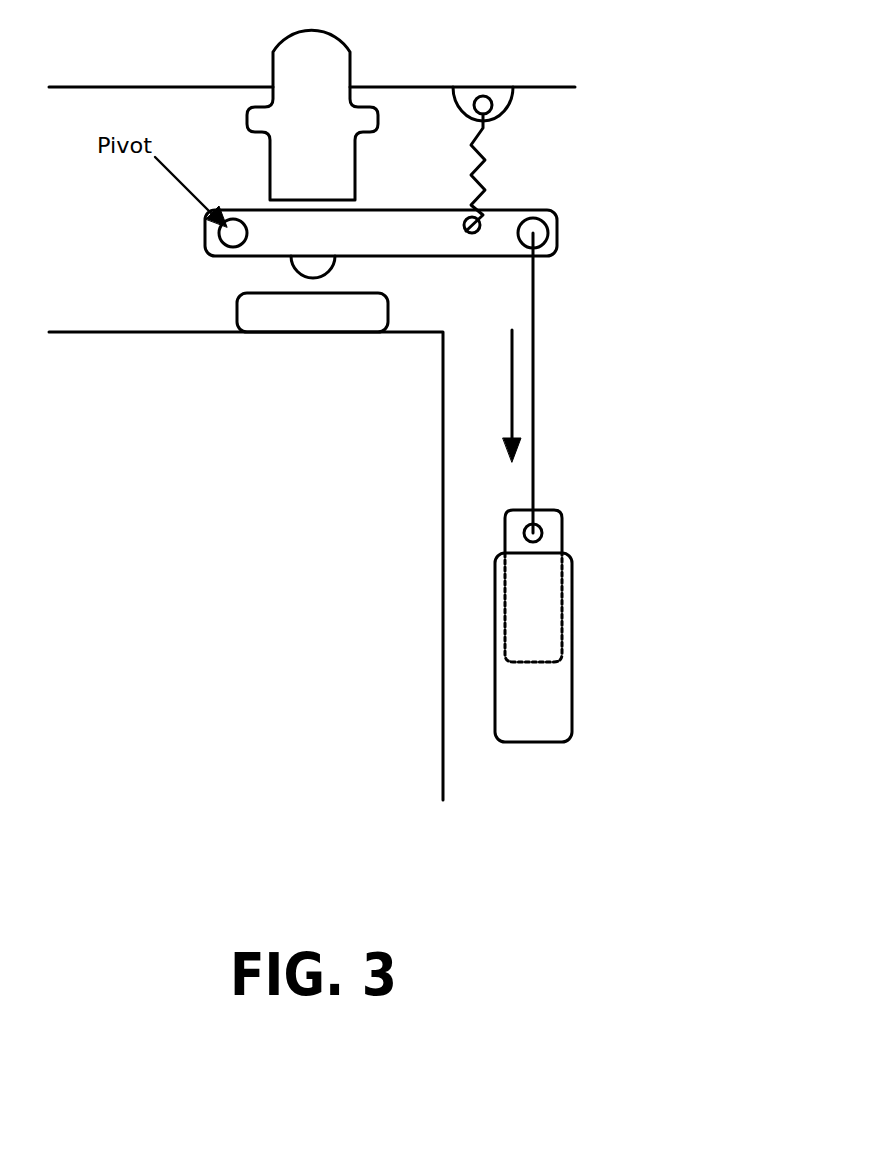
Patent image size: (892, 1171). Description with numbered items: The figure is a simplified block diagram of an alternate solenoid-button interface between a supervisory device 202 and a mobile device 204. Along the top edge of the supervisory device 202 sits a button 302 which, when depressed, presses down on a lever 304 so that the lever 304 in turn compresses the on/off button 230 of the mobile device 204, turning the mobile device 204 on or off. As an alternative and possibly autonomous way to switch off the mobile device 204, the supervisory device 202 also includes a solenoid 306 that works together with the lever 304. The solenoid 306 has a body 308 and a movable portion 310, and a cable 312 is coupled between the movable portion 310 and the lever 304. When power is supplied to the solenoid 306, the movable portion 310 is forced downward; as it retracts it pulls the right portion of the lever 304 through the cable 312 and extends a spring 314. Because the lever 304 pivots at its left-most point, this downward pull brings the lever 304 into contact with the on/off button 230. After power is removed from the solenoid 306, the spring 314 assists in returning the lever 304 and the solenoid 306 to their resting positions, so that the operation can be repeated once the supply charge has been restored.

The supervisory device 202 is at (557, 87).
The mobile device 204 is at (413, 332).
The on/off button 230 is at (355, 293).
The button 302 is at (328, 32).
The lever 304 is at (533, 209).
The solenoid 306 is at (595, 610).
The body 308 is at (572, 633).
The movable portion 310 is at (555, 510).
The cable 312 is at (533, 388).
The spring 314 is at (485, 151).